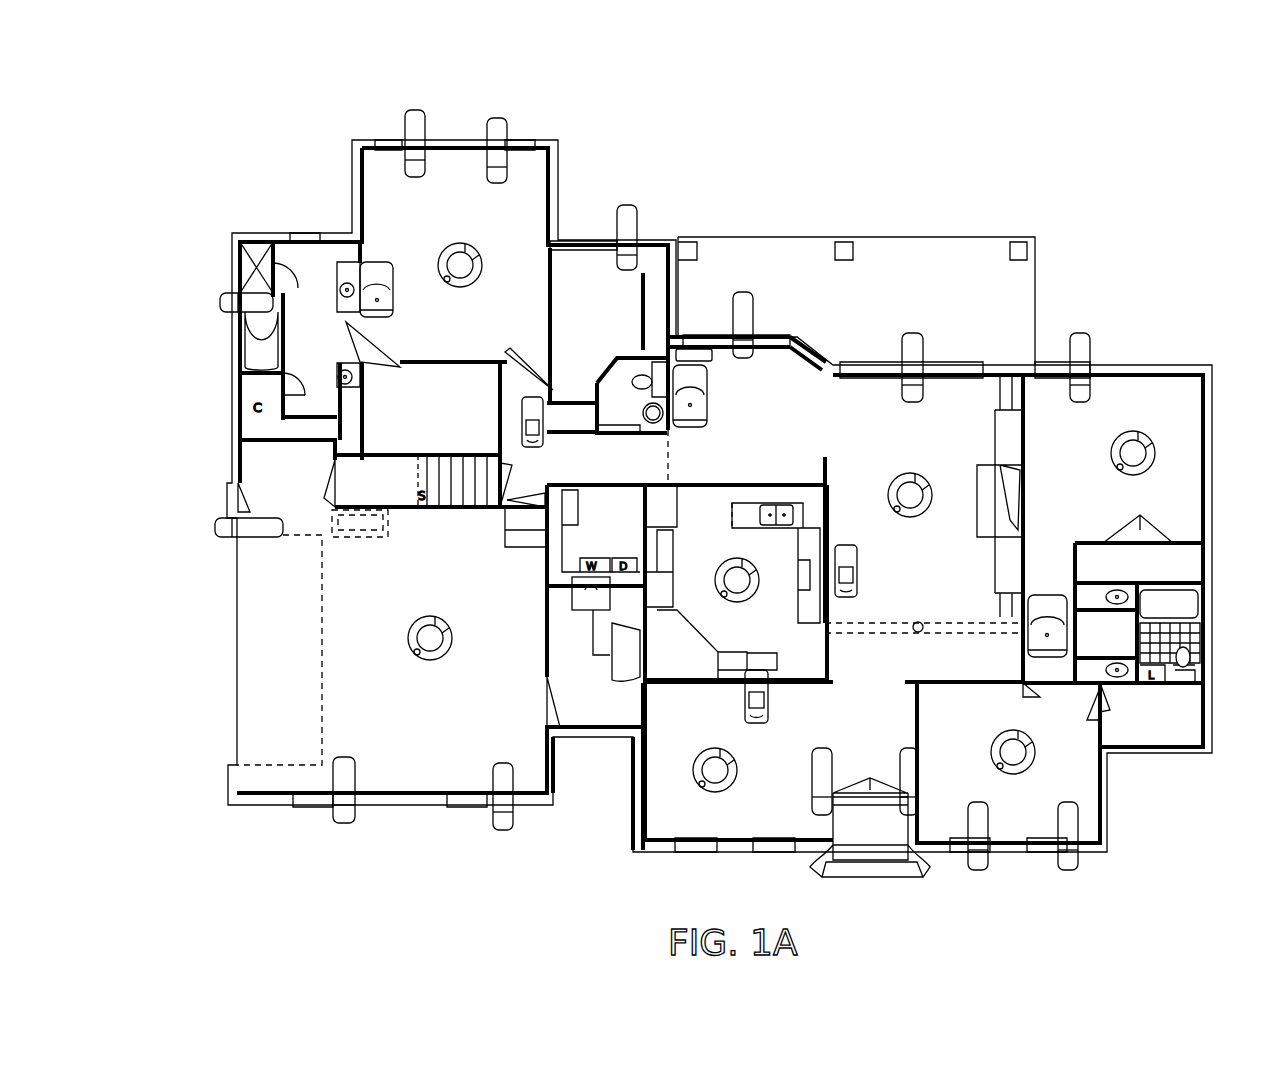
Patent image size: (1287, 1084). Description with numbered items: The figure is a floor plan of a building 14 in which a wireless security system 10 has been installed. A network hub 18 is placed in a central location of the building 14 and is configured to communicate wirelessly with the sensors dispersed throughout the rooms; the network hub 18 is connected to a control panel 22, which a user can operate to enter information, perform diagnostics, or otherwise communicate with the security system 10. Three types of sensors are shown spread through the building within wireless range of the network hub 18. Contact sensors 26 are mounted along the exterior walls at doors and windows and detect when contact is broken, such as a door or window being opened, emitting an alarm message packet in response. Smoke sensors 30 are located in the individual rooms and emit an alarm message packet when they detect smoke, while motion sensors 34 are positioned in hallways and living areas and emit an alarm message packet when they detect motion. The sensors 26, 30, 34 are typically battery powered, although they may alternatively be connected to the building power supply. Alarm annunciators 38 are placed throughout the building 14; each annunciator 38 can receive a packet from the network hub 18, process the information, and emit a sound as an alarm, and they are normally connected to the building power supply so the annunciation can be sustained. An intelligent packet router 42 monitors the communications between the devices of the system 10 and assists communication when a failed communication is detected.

The wireless security system 10 is at (965, 112).
The building 14 is at (1177, 370).
The network hub 18 is at (572, 592).
The control panel 22 is at (626, 660).
The contact sensor 26 is at (428, 110).
The smoke sensor 30 is at (447, 248).
The motion sensor 34 is at (545, 435).
The alarm annunciator 38 is at (393, 300).
The intelligent packet router 42 is at (712, 358).